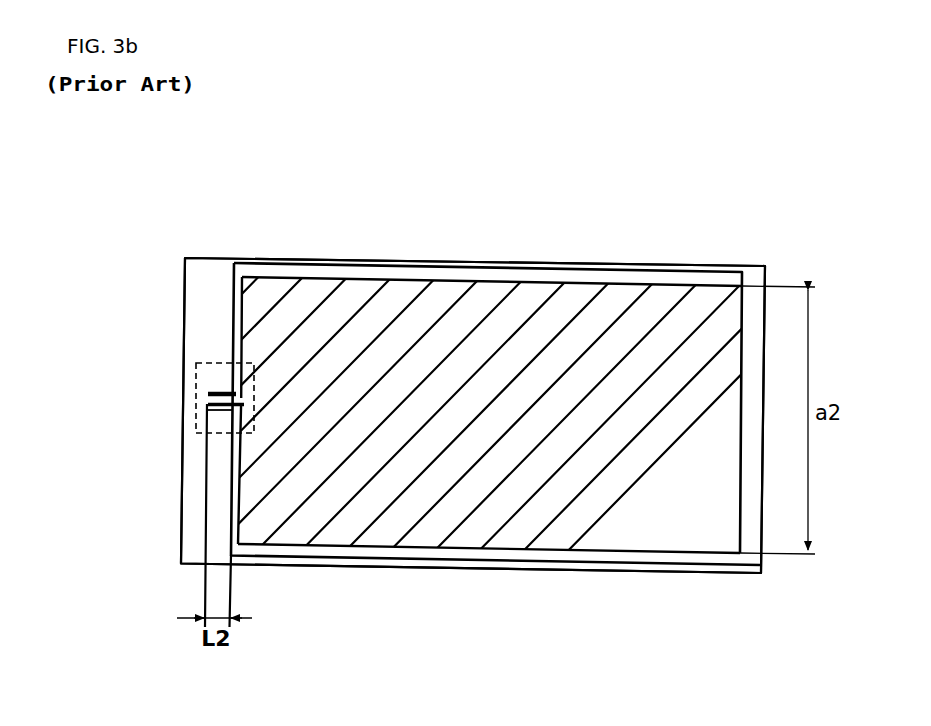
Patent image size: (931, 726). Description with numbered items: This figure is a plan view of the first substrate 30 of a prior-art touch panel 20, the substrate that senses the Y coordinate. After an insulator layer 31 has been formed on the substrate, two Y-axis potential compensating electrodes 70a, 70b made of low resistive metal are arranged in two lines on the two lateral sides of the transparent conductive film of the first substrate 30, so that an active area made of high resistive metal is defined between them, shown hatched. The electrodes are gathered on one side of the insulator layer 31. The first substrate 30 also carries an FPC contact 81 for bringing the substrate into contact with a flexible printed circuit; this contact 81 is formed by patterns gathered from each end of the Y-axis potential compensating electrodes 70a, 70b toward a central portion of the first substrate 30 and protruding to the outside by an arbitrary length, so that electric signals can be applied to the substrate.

The touch panel 20 is at (676, 188).
The first substrate 30 is at (732, 258).
The insulator layer 31 is at (215, 267).
The Y-axis potential compensating electrode 70a is at (420, 268).
The Y-axis potential compensating electrode 70b is at (375, 558).
The FPC contact 81 is at (198, 435).